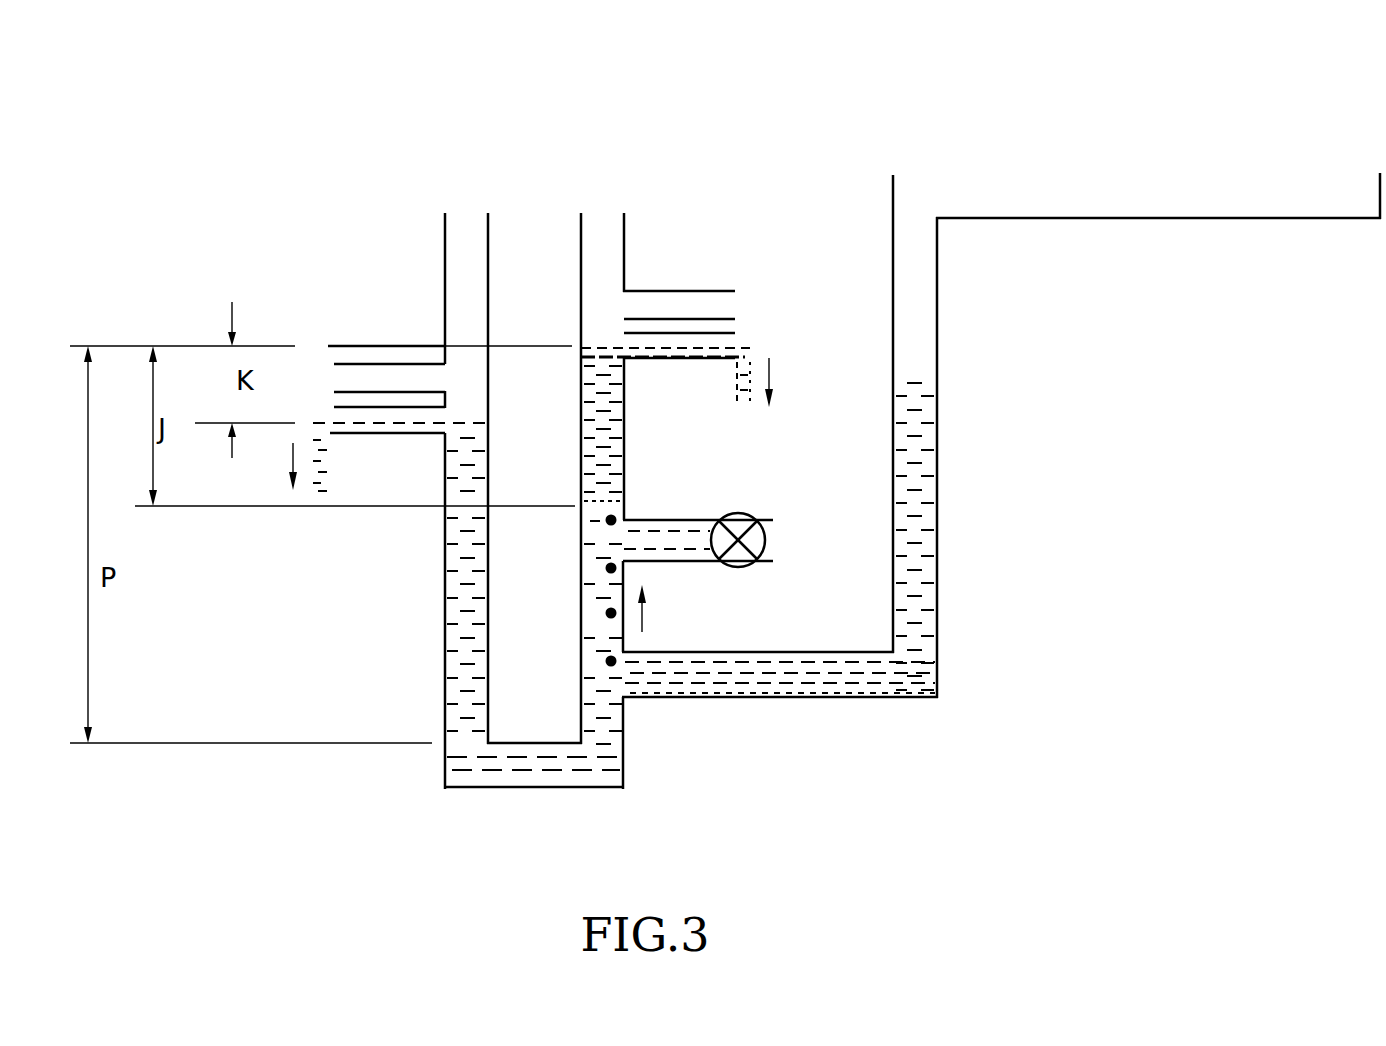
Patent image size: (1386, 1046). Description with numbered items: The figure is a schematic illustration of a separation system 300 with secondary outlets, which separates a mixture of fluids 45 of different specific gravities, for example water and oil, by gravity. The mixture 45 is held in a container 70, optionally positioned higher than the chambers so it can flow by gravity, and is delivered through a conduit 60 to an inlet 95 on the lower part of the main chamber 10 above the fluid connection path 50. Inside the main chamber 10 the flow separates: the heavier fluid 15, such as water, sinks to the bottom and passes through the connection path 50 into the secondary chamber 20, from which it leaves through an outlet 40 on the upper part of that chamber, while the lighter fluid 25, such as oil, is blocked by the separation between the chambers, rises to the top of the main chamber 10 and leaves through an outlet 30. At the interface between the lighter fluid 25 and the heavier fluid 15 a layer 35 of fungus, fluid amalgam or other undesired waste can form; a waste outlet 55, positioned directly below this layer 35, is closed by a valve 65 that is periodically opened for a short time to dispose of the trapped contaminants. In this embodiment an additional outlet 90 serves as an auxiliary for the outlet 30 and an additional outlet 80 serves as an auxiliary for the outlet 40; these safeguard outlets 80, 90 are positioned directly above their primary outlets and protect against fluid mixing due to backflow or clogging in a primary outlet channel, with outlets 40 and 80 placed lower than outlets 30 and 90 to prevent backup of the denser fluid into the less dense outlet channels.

The separation system 300 is at (736, 126).
The main chamber 10 is at (581, 237).
The secondary chamber 20 is at (488, 238).
The heavier fluid 15 is at (470, 570).
The lighter fluid 25 is at (608, 397).
The outlet 30 is at (705, 333).
The layer 35 is at (581, 502).
The outlet 40 is at (350, 403).
The mixture of fluids 45 is at (908, 387).
The fluid connection path 50 is at (520, 772).
The waste outlet 55 is at (767, 563).
The conduit 60 is at (937, 555).
The valve 65 is at (743, 513).
The container 70 is at (1110, 218).
The additional outlet 80 is at (365, 362).
The additional outlet 90 is at (705, 291).
The inlet 95 is at (617, 663).